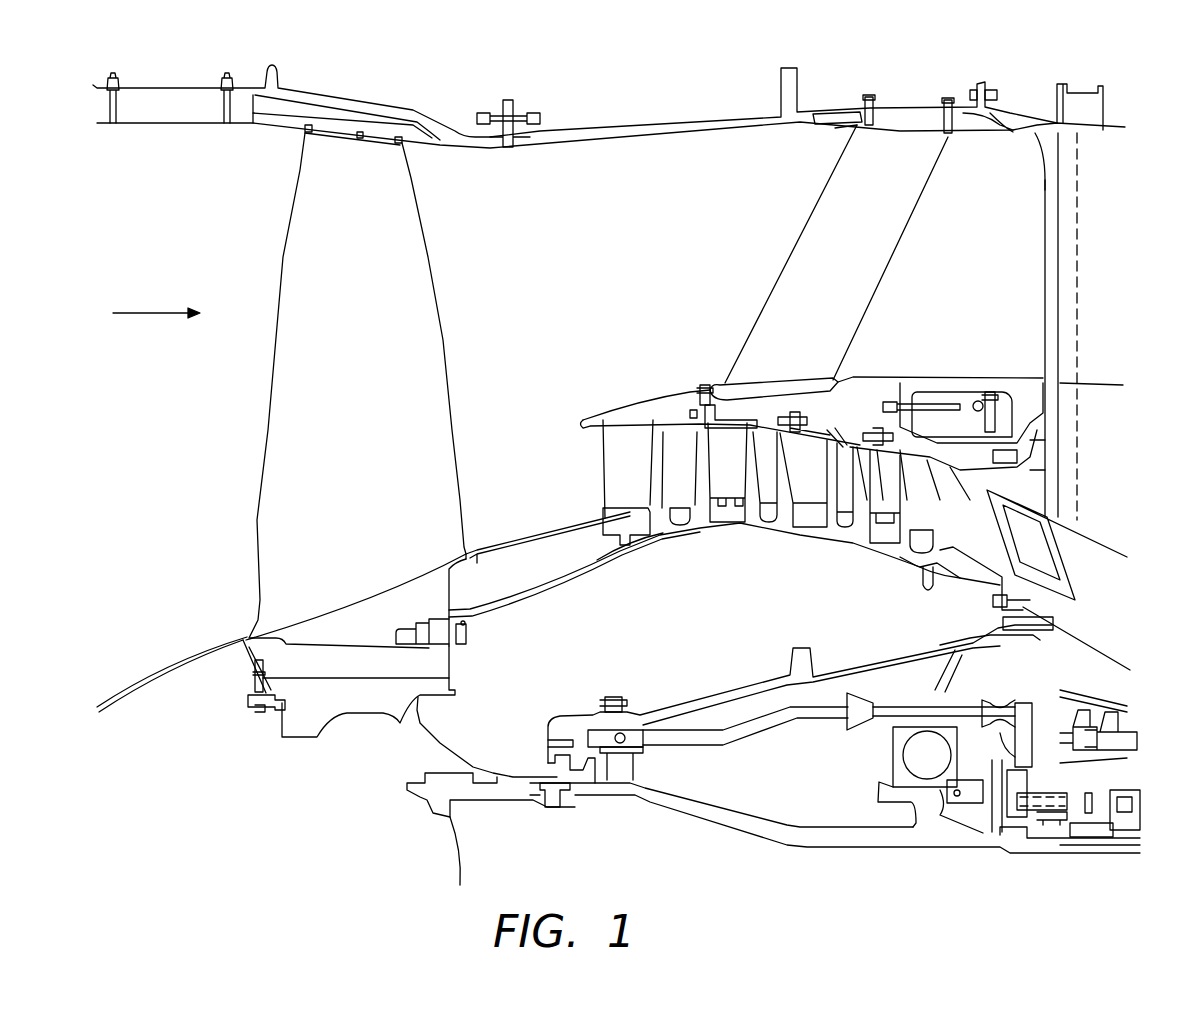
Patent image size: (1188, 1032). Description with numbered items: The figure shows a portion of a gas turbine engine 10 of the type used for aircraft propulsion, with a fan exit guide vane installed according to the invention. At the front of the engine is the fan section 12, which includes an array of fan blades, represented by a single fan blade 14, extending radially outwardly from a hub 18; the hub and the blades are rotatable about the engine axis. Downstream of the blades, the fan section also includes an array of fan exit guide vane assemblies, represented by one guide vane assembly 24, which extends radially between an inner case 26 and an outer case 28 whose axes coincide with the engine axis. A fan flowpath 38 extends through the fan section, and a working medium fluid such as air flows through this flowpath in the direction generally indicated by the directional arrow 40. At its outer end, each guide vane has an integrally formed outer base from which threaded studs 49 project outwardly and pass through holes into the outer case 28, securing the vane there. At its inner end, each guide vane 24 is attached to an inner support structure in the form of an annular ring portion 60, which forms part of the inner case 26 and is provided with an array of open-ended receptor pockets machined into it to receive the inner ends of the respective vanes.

The gas turbine engine 10 is at (622, 182).
The fan section 12 is at (213, 523).
The fan blade 14 is at (423, 315).
The hub 18 is at (216, 793).
The fan exit guide vane assembly 24 is at (787, 273).
The inner case 26 is at (720, 383).
The outer case 28 is at (835, 128).
The fan flowpath 38 is at (981, 273).
The directional arrow 40 is at (145, 313).
The threaded stud 49 is at (953, 127).
The annular ring portion 60 is at (870, 377).